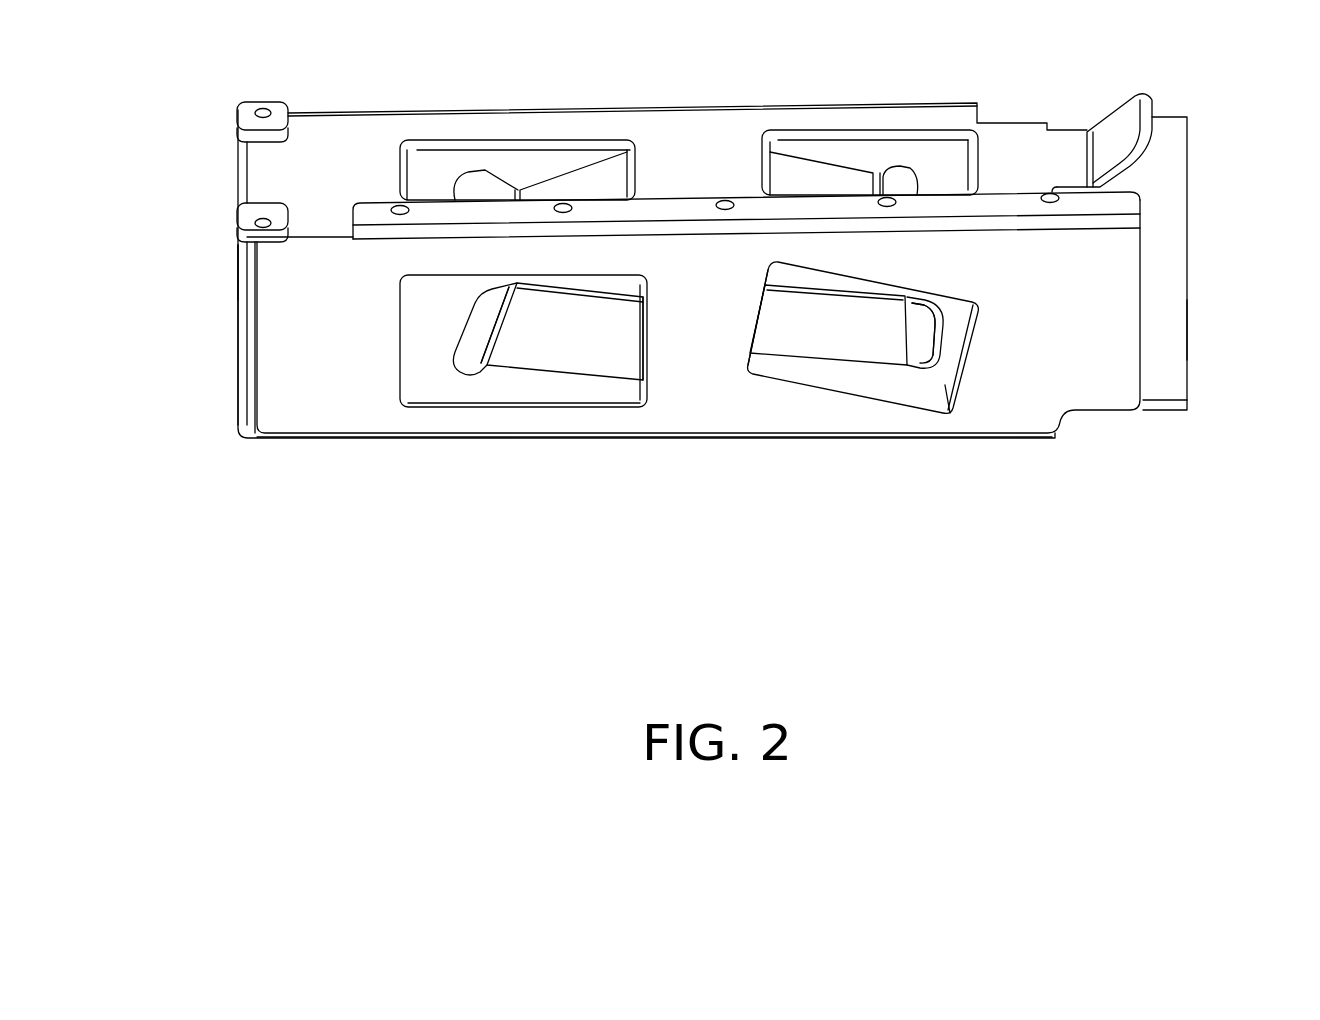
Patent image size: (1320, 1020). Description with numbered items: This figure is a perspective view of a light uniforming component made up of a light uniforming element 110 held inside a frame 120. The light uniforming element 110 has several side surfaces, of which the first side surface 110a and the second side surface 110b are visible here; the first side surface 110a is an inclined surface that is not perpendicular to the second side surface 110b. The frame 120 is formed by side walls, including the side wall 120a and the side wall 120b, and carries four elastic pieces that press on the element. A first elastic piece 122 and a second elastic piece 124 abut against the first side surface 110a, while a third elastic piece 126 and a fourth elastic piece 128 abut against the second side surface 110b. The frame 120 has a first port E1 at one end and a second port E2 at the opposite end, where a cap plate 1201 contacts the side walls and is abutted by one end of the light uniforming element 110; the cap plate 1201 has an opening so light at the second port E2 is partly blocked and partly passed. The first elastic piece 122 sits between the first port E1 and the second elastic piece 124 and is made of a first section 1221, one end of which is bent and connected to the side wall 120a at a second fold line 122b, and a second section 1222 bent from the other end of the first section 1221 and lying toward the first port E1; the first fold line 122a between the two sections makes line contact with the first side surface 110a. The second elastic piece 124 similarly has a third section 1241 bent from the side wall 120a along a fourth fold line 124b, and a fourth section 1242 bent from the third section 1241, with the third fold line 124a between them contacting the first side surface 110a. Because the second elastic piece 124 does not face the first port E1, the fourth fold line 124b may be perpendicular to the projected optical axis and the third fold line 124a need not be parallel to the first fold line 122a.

The light uniforming element 110 is at (1172, 175).
The first side surface 110a is at (955, 388).
The second side surface 110b is at (938, 170).
The frame 120 is at (747, 490).
The side wall 120a is at (683, 420).
The side wall 120b is at (695, 145).
The cap plate 1201 is at (243, 373).
The first elastic piece 122 is at (886, 406).
The first fold line 122a is at (905, 333).
The second fold line 122b is at (750, 322).
The first section 1221 is at (828, 345).
The second section 1222 is at (920, 360).
The second elastic piece 124 is at (556, 419).
The third fold line 124a is at (505, 332).
The fourth fold line 124b is at (643, 340).
The third section 1241 is at (528, 360).
The fourth section 1242 is at (467, 370).
The third elastic piece 126 is at (812, 177).
The fourth elastic piece 128 is at (560, 190).
The first port E1 is at (1163, 332).
The second port E2 is at (218, 278).